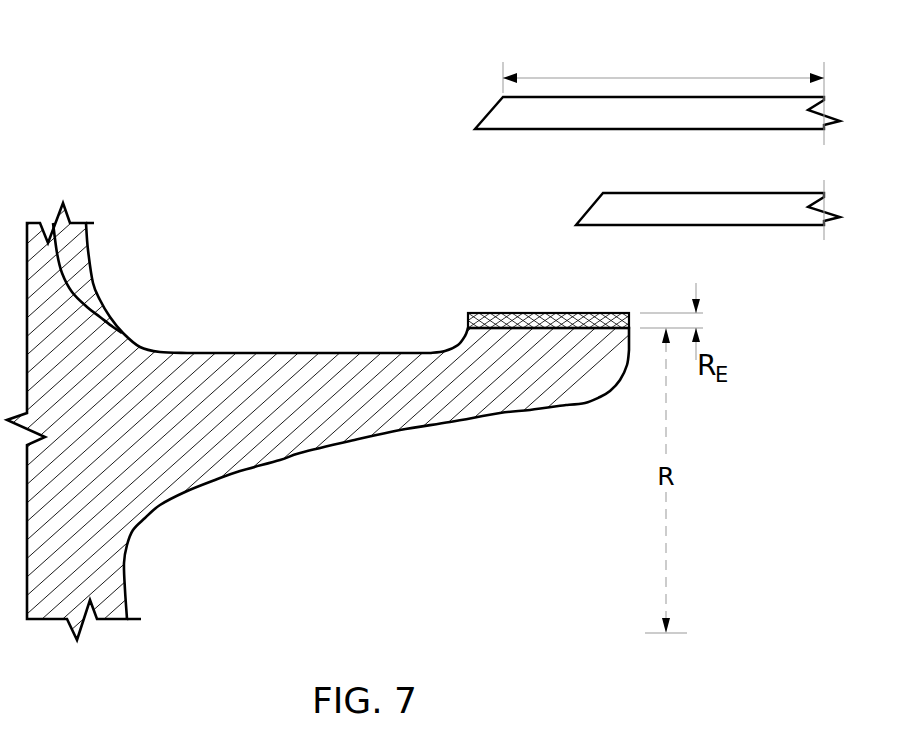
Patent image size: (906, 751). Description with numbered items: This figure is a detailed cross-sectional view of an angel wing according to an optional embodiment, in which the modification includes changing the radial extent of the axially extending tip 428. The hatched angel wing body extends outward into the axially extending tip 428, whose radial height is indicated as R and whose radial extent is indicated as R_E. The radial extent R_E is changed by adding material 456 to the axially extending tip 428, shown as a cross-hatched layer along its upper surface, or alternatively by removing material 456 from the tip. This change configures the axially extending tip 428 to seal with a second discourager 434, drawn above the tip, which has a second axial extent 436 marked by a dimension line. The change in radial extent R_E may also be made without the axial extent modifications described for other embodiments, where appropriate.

The axially extending tip 428 is at (508, 424).
The material 456 is at (502, 312).
The second discourager 434 is at (491, 114).
The second axial extent 436 is at (667, 77).